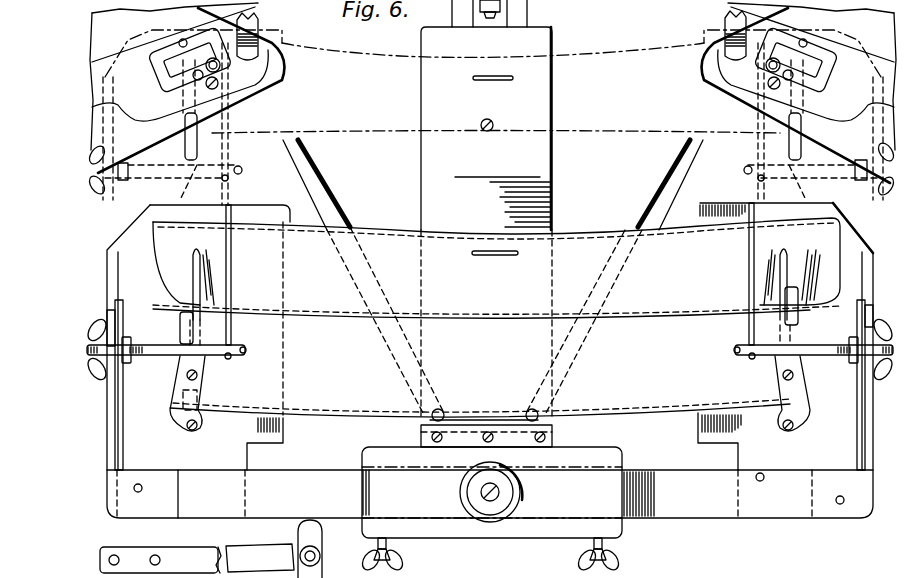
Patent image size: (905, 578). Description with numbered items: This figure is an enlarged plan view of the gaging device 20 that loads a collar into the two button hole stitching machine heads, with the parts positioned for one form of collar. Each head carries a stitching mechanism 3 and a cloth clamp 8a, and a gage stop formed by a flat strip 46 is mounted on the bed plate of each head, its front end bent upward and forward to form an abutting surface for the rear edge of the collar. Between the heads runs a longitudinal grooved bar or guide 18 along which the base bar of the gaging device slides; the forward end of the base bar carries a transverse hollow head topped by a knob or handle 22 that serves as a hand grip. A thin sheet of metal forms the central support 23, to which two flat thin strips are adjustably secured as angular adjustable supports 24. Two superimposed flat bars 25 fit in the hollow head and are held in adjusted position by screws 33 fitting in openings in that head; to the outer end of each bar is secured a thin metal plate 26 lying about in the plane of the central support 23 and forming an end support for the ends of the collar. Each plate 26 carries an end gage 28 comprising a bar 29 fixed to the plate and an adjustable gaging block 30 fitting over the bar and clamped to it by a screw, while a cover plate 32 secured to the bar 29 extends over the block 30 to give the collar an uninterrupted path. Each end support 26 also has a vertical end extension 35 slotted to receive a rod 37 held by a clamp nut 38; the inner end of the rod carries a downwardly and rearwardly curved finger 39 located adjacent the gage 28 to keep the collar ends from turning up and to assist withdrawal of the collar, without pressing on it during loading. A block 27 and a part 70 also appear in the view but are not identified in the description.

The stitching mechanism 3 is at (182, 40).
The cloth clamp 8a is at (491, 101).
The longitudinal grooved bar or guide 18 is at (523, 13).
The gaging device 20 is at (496, 230).
The knob or handle 22 is at (515, 490).
The central support 23 is at (549, 163).
The angular adjustable supports 24 is at (340, 213).
The superimposed flat bars 25 is at (490, 494).
The end support plate 26 is at (237, 458).
The block 27 is at (492, 492).
The end gage 28 is at (182, 376).
The bar 29 is at (190, 272).
The adjustable gaging block 30 is at (178, 326).
The cover plate 32 is at (200, 310).
The screws 33 is at (401, 557).
The vertical end extension 35 is at (127, 397).
The rod 37 is at (157, 354).
The clamp nut 38 is at (100, 318).
The curved finger 39 is at (232, 207).
The flat strip 46 is at (262, 50).
The screw 70 is at (488, 18).